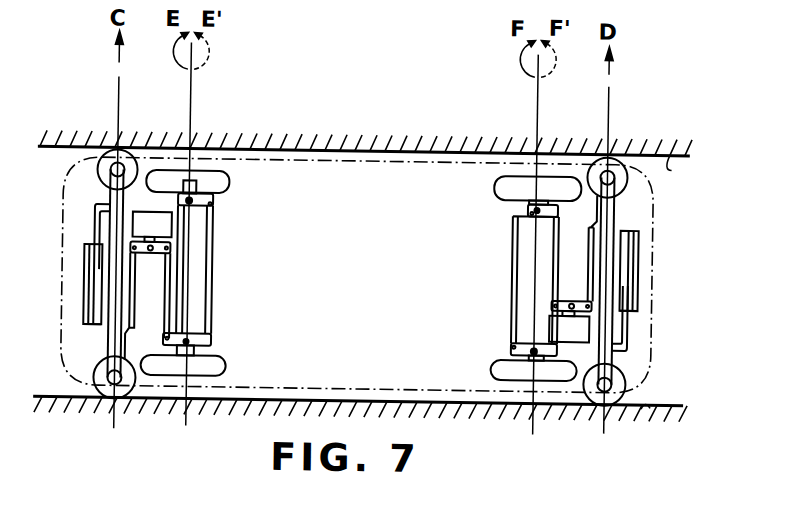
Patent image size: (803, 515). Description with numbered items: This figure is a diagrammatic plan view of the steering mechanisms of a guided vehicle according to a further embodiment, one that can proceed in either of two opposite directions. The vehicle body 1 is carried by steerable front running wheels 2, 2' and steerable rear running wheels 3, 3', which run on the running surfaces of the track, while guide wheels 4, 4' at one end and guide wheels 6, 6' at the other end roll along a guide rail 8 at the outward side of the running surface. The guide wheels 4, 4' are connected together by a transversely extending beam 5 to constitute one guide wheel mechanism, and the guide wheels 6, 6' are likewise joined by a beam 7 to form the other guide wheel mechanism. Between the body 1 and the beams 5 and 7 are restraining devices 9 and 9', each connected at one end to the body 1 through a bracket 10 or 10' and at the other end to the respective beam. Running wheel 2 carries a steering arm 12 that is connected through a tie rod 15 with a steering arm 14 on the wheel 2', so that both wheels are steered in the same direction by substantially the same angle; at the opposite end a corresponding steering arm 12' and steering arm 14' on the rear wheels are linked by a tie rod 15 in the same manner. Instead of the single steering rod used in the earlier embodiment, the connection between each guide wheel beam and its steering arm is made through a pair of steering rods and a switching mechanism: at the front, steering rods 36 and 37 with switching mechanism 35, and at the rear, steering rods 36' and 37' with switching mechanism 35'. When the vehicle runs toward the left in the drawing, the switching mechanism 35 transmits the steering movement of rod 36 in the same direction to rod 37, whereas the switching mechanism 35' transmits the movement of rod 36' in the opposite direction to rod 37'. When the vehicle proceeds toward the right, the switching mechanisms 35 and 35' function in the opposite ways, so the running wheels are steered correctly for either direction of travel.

The body 1 is at (362, 163).
The front running wheel 2 is at (204, 179).
The front running wheel 2' is at (198, 369).
The rear running wheel 3 is at (521, 185).
The rear running wheel 3' is at (514, 373).
The guide wheel 4 is at (109, 146).
The guide wheel 4' is at (98, 401).
The beam 5 is at (108, 203).
The guide wheel 6 is at (614, 156).
The guide wheel 6' is at (590, 408).
The beam 7 is at (614, 348).
The guide rail 8 is at (668, 151).
The restraining device 9 is at (69, 278).
The restraining device 9' is at (651, 310).
The bracket 10 is at (81, 330).
The bracket 10' is at (656, 268).
The steering arm 12 is at (205, 337).
The steering arm 12' is at (513, 212).
The steering arm 14 is at (216, 200).
The steering arm 14' is at (510, 348).
The tie rod 15 is at (213, 269).
The switching mechanism 35 is at (190, 233).
The switching mechanism 35' is at (530, 321).
The steering rod 36 is at (100, 305).
The steering rod 36' is at (645, 249).
The steering rod 37 is at (214, 269).
The steering rod 37' is at (511, 280).